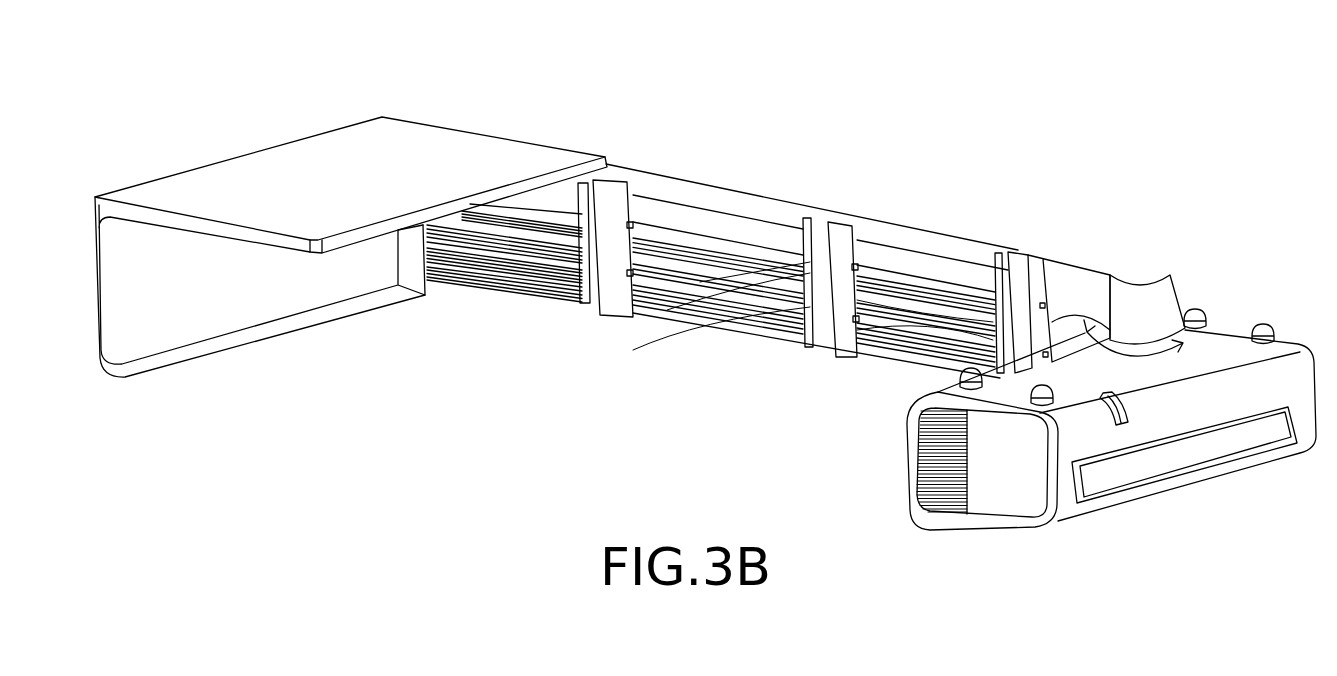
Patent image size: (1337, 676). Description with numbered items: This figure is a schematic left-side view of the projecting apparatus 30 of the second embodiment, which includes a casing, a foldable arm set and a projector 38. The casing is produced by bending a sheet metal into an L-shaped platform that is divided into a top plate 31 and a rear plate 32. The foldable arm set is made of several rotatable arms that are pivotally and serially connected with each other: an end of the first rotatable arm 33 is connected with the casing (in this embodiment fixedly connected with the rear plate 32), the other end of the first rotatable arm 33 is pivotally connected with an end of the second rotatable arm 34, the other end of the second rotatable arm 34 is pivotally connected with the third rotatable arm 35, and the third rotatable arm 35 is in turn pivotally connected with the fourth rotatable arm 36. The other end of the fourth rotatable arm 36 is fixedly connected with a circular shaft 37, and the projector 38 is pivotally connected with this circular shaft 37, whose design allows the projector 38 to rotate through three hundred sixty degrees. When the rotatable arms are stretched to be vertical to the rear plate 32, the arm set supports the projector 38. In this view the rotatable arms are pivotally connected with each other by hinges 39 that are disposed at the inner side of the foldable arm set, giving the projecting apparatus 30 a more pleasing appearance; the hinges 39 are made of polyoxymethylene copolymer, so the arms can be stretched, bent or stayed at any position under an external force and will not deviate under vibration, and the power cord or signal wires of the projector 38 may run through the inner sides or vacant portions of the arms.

The projecting apparatus 30 is at (610, 72).
The top plate 31 is at (262, 178).
The rear plate 32 is at (124, 307).
The first rotatable arm 33 is at (530, 258).
The second rotatable arm 34 is at (718, 198).
The third rotatable arm 35 is at (928, 243).
The fourth rotatable arm 36 is at (1068, 282).
The circular shaft 37 is at (1143, 277).
The projector 38 is at (1217, 340).
The hinges 39 is at (700, 320).